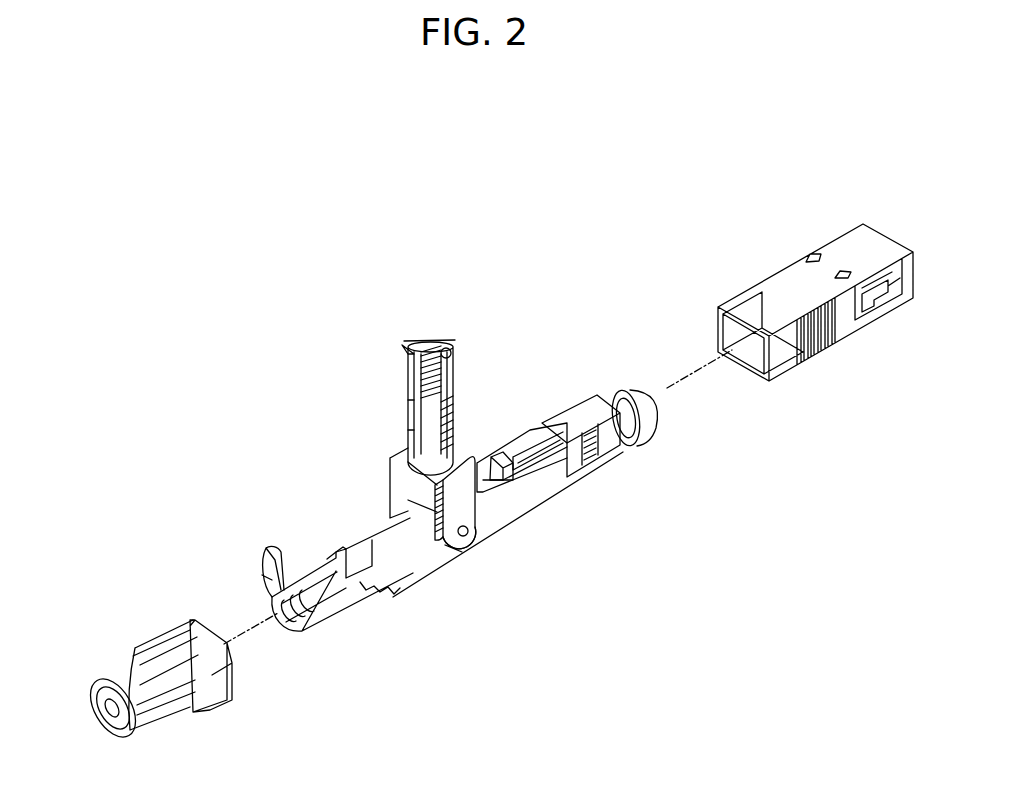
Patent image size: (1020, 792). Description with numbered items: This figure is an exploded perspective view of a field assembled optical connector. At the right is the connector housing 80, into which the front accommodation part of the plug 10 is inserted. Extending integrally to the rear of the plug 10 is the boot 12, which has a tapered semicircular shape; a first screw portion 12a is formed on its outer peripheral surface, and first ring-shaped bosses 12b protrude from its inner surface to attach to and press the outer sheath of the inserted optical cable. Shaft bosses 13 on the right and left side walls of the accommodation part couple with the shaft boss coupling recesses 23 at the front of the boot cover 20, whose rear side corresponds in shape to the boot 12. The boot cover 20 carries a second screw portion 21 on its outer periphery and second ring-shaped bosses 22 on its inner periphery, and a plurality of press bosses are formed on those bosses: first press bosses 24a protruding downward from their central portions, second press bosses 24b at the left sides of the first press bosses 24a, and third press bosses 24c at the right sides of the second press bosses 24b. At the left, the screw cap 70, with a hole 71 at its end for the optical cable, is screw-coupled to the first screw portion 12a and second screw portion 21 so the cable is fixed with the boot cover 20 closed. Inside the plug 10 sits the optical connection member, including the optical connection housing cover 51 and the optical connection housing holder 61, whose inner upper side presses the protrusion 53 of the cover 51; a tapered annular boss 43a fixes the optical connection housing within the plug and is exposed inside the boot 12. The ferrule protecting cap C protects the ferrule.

The plug 10 is at (543, 502).
The boot 12 is at (343, 610).
The first screw portion 12a is at (332, 554).
The first ring-shaped bosses 12b is at (265, 556).
The shaft bosses 13 is at (460, 545).
The boot cover 20 is at (390, 460).
The second screw portion 21 is at (406, 410).
The second ring-shaped bosses 22 is at (404, 352).
The shaft boss coupling recesses 23 is at (472, 537).
The first press bosses 24a is at (434, 348).
The second press bosses 24b is at (421, 345).
The third press bosses 24c is at (450, 351).
The tapered annular boss 43a is at (435, 545).
The optical connection housing cover 51 is at (521, 442).
The protrusion 53 is at (550, 432).
The optical connection housing holder 61 is at (489, 456).
The screw cap 70 is at (155, 632).
The hole 71 is at (95, 722).
The connector housing 80 is at (780, 262).
The ferrule protecting cap C is at (653, 404).